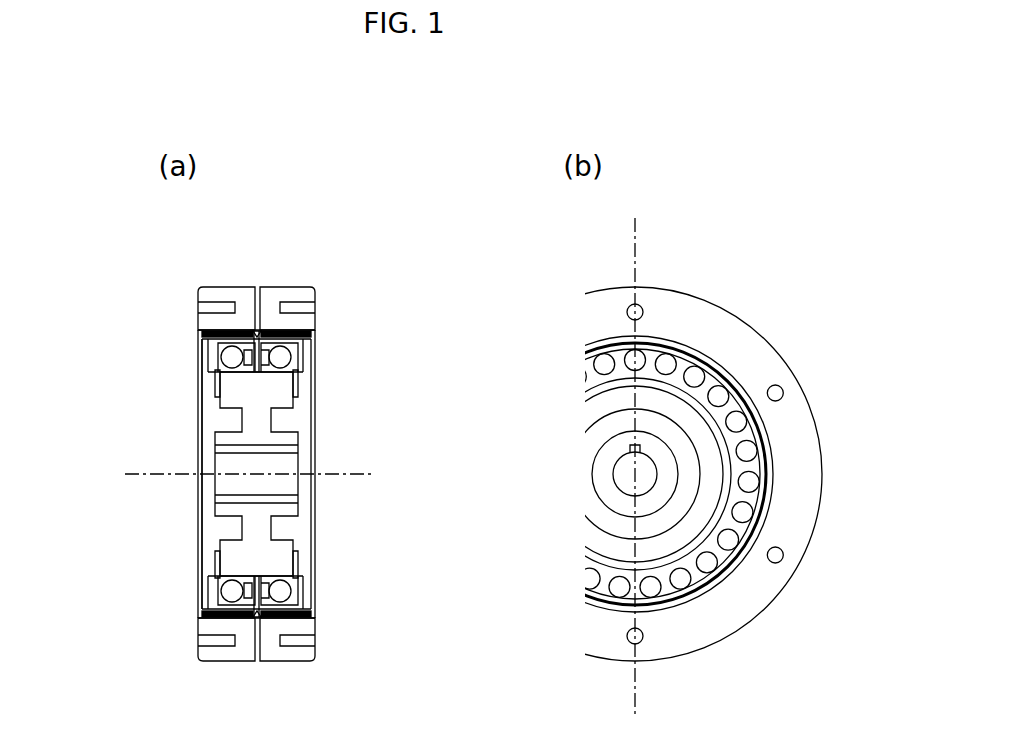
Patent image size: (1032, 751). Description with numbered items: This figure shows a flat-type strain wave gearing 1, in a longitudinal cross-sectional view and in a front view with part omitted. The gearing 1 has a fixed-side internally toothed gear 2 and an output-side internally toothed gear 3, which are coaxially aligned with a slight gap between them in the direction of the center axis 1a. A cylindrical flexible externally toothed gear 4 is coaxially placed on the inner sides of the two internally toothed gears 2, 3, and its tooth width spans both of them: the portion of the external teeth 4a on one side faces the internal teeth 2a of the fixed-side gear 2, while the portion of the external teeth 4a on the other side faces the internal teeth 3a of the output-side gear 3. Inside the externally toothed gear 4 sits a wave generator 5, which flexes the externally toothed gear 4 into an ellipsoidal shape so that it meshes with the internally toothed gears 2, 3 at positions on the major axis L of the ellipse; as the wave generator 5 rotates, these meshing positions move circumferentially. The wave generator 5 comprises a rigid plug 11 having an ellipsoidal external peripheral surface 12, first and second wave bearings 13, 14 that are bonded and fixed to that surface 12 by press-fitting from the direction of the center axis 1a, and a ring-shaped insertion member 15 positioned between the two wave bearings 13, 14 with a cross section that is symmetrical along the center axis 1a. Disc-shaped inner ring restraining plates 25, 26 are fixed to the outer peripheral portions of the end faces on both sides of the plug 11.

The flat-type strain wave gearing 1 is at (362, 300).
The center axis 1a is at (133, 474).
The major axis L is at (638, 229).
The fixed-side internally toothed gear 2 is at (315, 327).
The internal teeth 2a is at (270, 334).
The output-side internally toothed gear 3 is at (203, 328).
The internal teeth 3a is at (228, 334).
The flexible externally toothed gear 4 is at (202, 348).
The external teeth 4a is at (222, 339).
The wave generator 5 is at (207, 422).
The rigid plug 11 is at (292, 503).
The ellipsoidal external peripheral surface 12 is at (283, 363).
The first wave bearing 13 is at (292, 592).
The second wave bearing 14 is at (227, 592).
The insertion member 15 is at (253, 575).
The inner ring restraining plate 25 is at (296, 383).
The inner ring restraining plate 26 is at (216, 380).